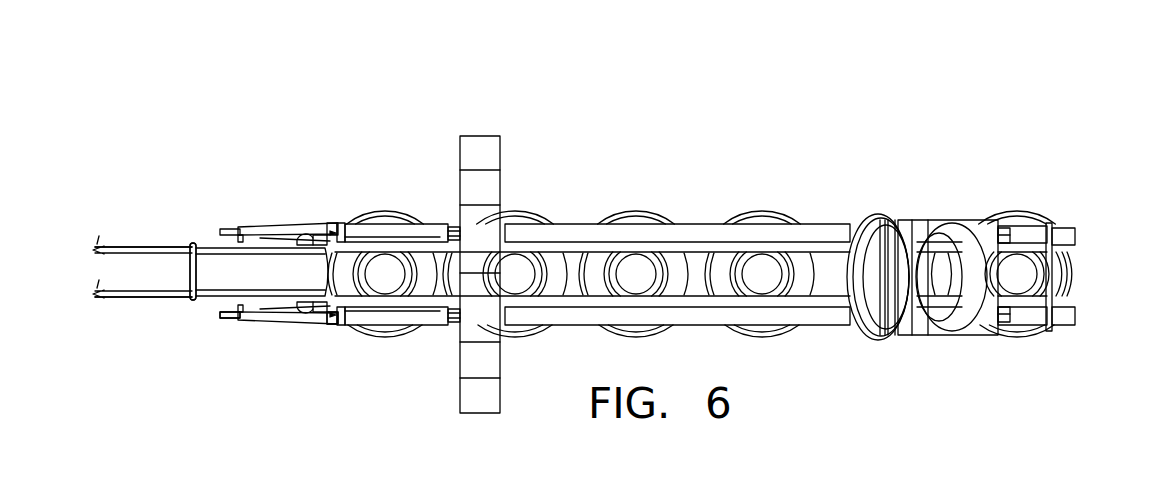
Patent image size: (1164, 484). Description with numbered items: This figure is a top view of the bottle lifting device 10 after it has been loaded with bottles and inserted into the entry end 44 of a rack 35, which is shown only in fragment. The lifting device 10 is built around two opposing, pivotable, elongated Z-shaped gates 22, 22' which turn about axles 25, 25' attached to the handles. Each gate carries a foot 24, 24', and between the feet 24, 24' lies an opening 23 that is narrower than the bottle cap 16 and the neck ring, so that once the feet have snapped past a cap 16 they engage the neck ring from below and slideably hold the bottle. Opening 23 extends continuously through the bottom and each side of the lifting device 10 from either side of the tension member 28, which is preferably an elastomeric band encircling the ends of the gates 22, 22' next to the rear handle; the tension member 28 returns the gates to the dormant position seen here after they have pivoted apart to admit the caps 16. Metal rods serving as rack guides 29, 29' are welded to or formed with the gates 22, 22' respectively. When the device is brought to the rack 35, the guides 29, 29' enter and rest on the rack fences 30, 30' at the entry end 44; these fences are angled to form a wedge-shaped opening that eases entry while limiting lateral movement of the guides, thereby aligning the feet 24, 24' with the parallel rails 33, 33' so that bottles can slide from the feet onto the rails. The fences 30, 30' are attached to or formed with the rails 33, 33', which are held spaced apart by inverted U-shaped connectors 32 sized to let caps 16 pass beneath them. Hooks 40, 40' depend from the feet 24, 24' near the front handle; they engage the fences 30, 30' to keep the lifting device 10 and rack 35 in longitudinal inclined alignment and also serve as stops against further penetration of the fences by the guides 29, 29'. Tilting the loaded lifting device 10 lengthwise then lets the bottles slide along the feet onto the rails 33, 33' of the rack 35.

The bottle lifting device 10 is at (821, 112).
The cap 16 is at (623, 286).
The Z-shaped gate 22 is at (696, 205).
The Z-shaped gate 22' is at (696, 345).
The opening 23 is at (575, 238).
The foot 24 is at (1087, 238).
The foot 24' is at (1090, 322).
The axle 25 is at (439, 202).
The axle 25' is at (440, 344).
The tension member 28 is at (1048, 224).
The rack guide 29 is at (235, 209).
The rack guide 29' is at (238, 336).
The rack fence 30 is at (288, 211).
The rack fence 30' is at (288, 334).
The connector 32 is at (189, 268).
The rail 33 is at (142, 223).
The rail 33' is at (139, 312).
The rack 35 is at (185, 168).
The hook 40 is at (318, 217).
The hook 40' is at (321, 329).
The entry end 44 is at (190, 321).